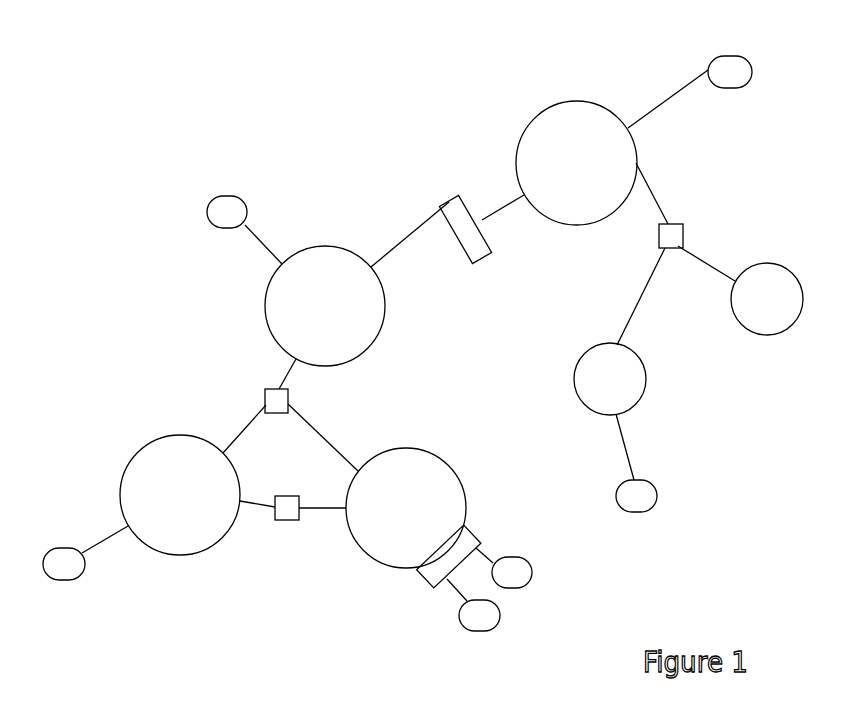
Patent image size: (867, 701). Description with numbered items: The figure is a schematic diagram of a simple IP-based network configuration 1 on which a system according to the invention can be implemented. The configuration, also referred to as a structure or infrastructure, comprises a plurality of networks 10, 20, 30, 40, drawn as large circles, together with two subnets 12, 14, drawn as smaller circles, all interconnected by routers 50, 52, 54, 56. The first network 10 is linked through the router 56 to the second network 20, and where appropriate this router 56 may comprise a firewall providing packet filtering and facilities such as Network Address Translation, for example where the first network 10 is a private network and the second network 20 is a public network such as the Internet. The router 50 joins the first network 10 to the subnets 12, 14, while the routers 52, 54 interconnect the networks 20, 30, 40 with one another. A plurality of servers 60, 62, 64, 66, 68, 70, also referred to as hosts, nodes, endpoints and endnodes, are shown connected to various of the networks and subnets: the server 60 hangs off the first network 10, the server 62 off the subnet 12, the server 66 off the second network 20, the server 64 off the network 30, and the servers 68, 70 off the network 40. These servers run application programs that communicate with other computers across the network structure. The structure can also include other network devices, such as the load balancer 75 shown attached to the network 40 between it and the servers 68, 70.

The network configuration 1 is at (222, 115).
The network 10 is at (576, 150).
The subnet 12 is at (622, 369).
The subnet 14 is at (770, 287).
The network 20 is at (341, 306).
The network 30 is at (180, 477).
The network 40 is at (408, 503).
The router 50 is at (686, 219).
The router 52 is at (296, 400).
The router 54 is at (301, 495).
The router 56 is at (465, 213).
The server 60 is at (735, 54).
The server 62 is at (646, 481).
The server 64 is at (81, 564).
The server 66 is at (240, 199).
The server 68 is at (490, 626).
The server 70 is at (528, 571).
The load balancer 75 is at (442, 570).